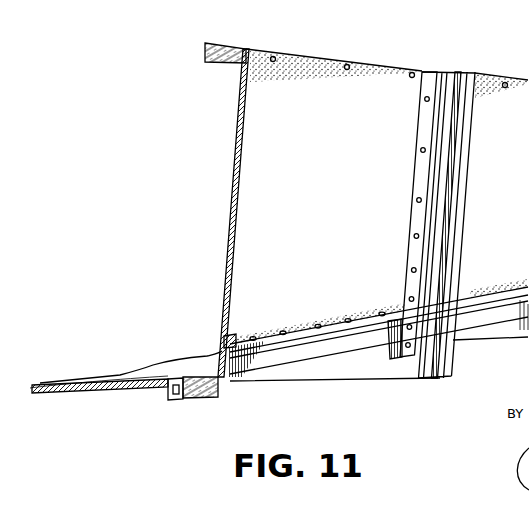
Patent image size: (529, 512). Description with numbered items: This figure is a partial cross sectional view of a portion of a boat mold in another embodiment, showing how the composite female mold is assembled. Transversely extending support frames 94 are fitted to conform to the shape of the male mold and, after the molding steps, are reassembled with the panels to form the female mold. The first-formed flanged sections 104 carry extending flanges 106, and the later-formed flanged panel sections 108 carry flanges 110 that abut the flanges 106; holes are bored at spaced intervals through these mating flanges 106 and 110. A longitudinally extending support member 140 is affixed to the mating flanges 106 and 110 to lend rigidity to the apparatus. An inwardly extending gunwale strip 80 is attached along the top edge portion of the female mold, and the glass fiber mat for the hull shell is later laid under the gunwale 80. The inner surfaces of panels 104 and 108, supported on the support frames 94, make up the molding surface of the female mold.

The gunwale strip 80 is at (228, 47).
The flanged sections 104 is at (341, 214).
The extending flanges 106 is at (420, 220).
The support frames 94 is at (448, 222).
The flanges 110 is at (380, 327).
The longitudinally extending support member 140 is at (243, 383).
The flanged panel sections 108 is at (297, 352).